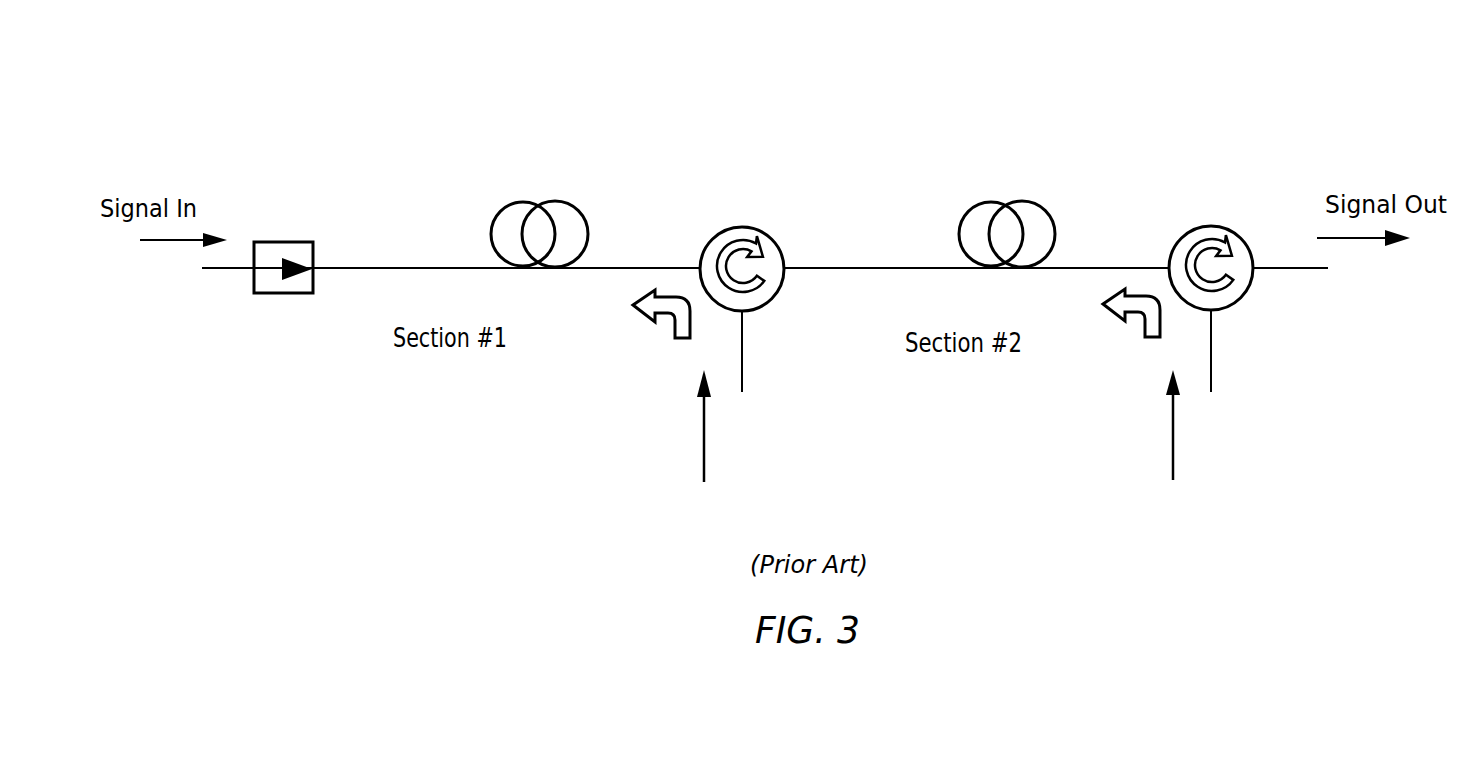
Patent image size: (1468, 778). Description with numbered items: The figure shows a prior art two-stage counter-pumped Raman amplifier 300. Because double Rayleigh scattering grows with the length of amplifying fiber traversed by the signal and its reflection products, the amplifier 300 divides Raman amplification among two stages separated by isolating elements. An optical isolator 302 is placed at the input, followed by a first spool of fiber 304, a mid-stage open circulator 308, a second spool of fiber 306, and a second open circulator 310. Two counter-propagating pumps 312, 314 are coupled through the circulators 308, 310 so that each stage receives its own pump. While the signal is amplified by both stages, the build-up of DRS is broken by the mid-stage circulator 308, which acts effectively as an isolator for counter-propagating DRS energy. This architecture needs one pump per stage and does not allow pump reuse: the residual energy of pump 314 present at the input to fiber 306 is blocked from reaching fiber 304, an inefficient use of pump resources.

The two-stage amplifier 300 is at (765, 146).
The optical isolator 302 is at (313, 245).
The spool of fiber 304 is at (496, 214).
The spool of fiber 306 is at (963, 214).
The open circulator 308 is at (772, 292).
The open circulator 310 is at (1244, 292).
The counter-propagating pump 312 is at (726, 446).
The counter-propagating pump 314 is at (1202, 446).